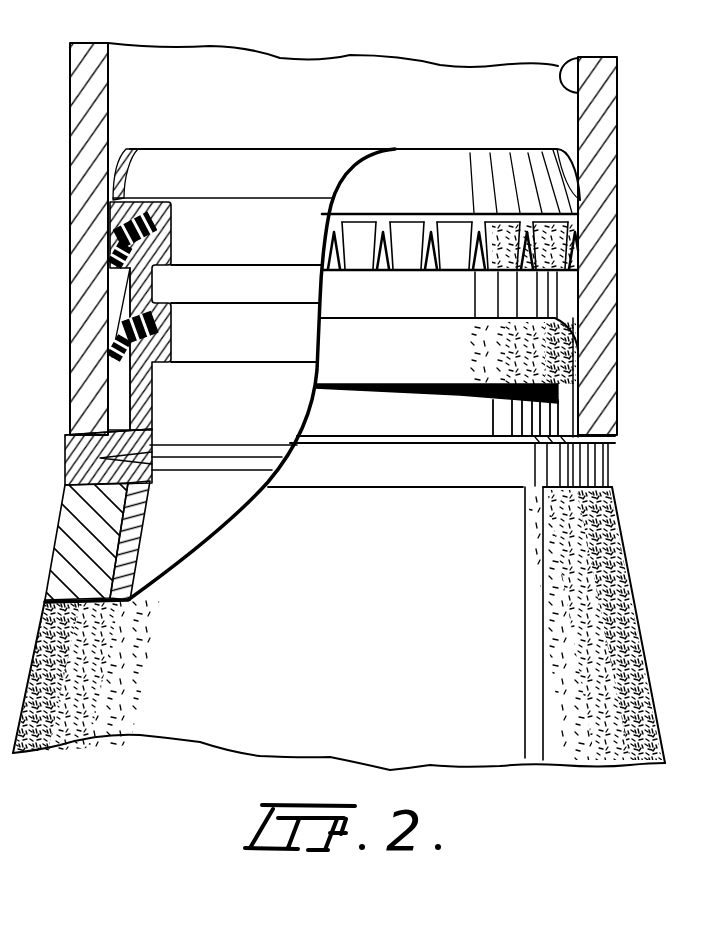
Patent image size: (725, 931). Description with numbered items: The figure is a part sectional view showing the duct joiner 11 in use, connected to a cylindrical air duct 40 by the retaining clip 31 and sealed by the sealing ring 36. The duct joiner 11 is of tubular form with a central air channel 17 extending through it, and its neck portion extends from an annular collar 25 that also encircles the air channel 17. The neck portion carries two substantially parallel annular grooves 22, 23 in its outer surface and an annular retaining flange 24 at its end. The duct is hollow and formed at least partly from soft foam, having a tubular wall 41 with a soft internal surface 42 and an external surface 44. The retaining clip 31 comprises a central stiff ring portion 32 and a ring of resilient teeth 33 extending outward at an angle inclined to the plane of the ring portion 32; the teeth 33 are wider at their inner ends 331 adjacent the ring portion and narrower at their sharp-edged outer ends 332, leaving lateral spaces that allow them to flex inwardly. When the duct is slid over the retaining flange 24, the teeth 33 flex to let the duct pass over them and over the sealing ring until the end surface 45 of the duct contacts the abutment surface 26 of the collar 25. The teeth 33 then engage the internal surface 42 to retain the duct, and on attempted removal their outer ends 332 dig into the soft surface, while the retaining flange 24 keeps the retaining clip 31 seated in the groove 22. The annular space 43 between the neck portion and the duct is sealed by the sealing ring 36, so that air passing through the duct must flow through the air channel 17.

The duct joiner 11 is at (640, 560).
The air channel 17 is at (280, 175).
The annular groove 22 is at (152, 224).
The annular groove 23 is at (152, 326).
The retaining flange 24 is at (112, 199).
The annular collar 25 is at (110, 430).
The abutment surface 26 is at (100, 458).
The retaining clip 31 is at (456, 235).
The central ring portion 32 is at (145, 205).
The resilient teeth 33 is at (108, 258).
The inner ends 331 is at (413, 216).
The outer ends 332 is at (410, 272).
The sealing ring 36 is at (108, 343).
The cylindrical air duct 40 is at (68, 122).
The tubular wall 41 is at (598, 118).
The internal surface 42 is at (570, 60).
The annular space 43 is at (115, 298).
The external surface 44 is at (617, 288).
The end surface 45 is at (600, 442).